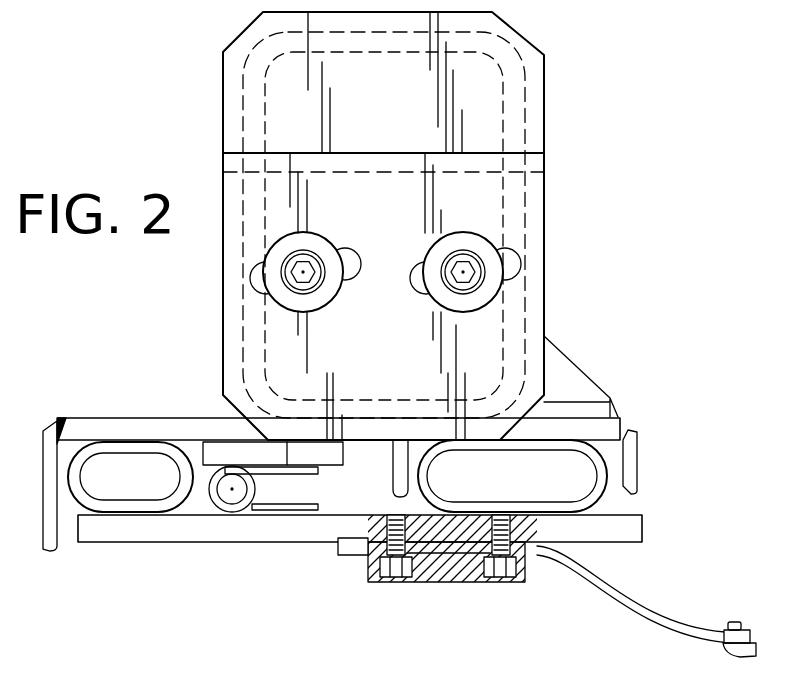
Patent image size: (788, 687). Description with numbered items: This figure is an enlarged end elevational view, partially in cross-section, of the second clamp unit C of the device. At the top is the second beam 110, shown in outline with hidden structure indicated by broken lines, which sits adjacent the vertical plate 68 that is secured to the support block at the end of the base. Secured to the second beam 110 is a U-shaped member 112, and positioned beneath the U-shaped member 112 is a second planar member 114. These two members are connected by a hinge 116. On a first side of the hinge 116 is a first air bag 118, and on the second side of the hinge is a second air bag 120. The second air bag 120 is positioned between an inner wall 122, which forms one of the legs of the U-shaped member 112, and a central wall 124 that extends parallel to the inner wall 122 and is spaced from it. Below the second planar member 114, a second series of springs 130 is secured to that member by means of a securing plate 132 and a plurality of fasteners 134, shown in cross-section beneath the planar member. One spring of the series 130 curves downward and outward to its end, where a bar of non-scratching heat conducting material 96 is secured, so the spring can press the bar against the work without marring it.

The second clamp unit C is at (540, 38).
The vertical plate 68 is at (527, 117).
The second beam 110 is at (525, 202).
The U-shaped member 112 is at (190, 430).
The second planar member 114 is at (192, 528).
The hinge 116 is at (230, 497).
The first air bag 118 is at (105, 465).
The second air bag 120 is at (573, 448).
The inner wall 122 is at (628, 467).
The central wall 124 is at (395, 468).
The second series of springs 130 is at (630, 588).
The securing plate 132 is at (462, 575).
The fasteners 134 is at (390, 580).
The bar of non-scratching heat conducting material 96 is at (738, 645).